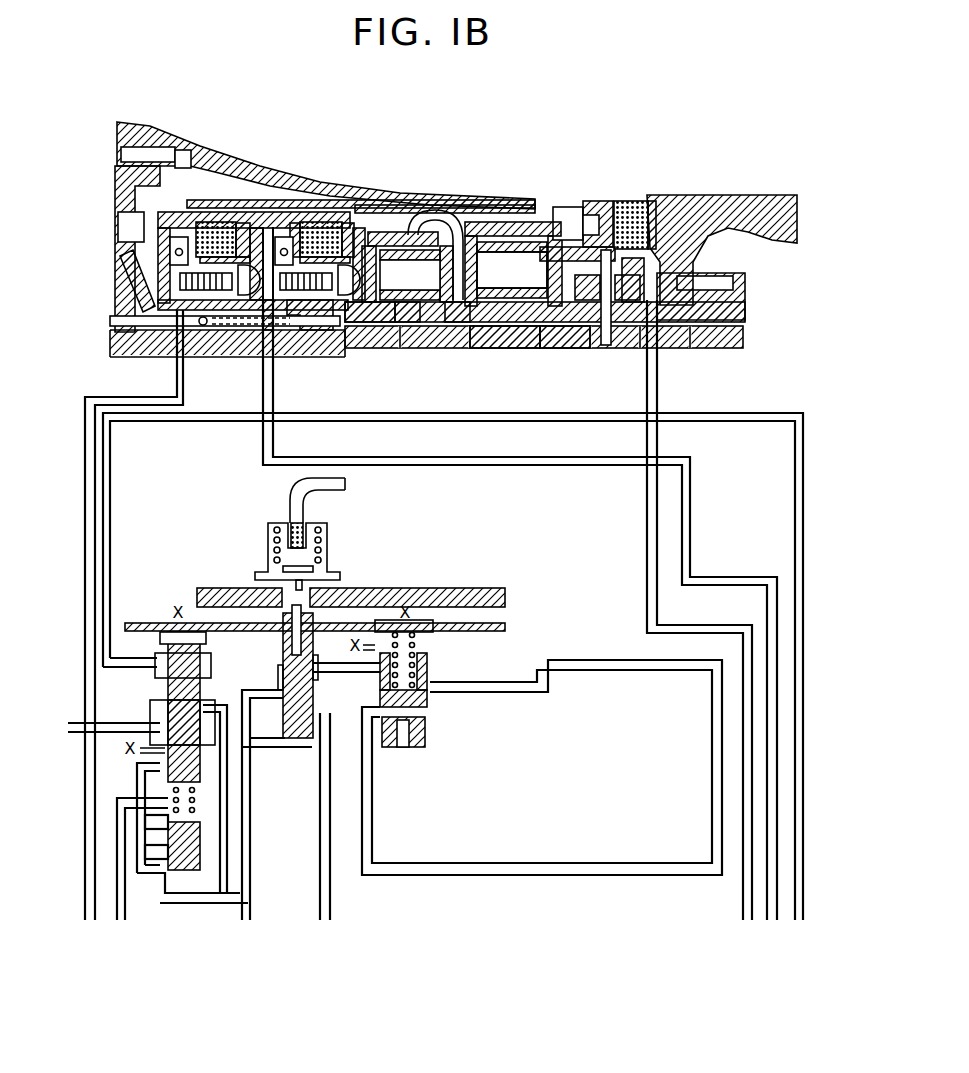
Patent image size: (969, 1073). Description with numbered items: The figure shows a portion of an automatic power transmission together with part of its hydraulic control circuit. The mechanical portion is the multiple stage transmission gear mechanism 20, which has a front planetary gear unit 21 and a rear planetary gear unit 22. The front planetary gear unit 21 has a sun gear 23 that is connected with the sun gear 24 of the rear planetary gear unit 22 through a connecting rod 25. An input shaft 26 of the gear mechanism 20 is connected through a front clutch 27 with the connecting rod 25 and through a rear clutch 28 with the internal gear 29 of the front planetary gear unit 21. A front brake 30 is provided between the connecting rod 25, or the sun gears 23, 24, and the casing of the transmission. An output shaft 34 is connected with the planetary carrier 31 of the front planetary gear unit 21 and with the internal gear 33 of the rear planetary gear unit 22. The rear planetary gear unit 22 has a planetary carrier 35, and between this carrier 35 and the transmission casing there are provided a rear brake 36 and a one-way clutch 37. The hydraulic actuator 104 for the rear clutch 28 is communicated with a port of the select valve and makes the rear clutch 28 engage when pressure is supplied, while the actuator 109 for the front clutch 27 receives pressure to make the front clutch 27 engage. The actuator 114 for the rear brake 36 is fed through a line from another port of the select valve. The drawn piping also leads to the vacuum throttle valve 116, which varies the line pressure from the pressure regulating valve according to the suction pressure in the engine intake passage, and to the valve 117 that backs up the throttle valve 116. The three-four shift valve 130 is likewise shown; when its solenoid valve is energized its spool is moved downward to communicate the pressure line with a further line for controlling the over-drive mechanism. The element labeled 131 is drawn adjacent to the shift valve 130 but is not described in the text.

The multiple stage transmission gear mechanism 20 is at (400, 222).
The front planetary gear unit 21 is at (408, 222).
The rear planetary gear unit 22 is at (472, 232).
The sun gear 23 is at (405, 347).
The sun gear 24 is at (497, 317).
The connecting rod 25 is at (452, 313).
The input shaft 26 is at (242, 345).
The front clutch 27 is at (219, 225).
The rear clutch 28 is at (347, 230).
The internal gear 29 is at (440, 230).
The front brake 30 is at (250, 200).
The planetary carrier 31 is at (358, 317).
The internal gear 33 is at (520, 225).
The output shaft 34 is at (550, 337).
The planetary carrier 35 is at (508, 213).
The rear brake 36 is at (630, 203).
The one-way clutch 37 is at (572, 287).
The hydraulic actuator 104 is at (287, 297).
The actuator 109 is at (180, 297).
The actuator 114 is at (640, 287).
The vacuum throttle valve 116 is at (303, 625).
The valve 117 is at (434, 660).
The 3-4 shift valve 130 is at (150, 614).
The valve body 131 is at (193, 748).